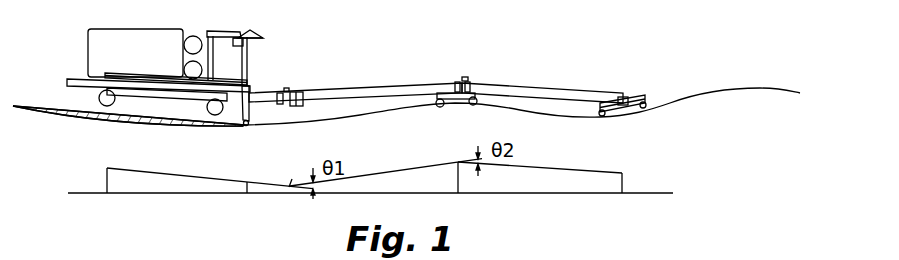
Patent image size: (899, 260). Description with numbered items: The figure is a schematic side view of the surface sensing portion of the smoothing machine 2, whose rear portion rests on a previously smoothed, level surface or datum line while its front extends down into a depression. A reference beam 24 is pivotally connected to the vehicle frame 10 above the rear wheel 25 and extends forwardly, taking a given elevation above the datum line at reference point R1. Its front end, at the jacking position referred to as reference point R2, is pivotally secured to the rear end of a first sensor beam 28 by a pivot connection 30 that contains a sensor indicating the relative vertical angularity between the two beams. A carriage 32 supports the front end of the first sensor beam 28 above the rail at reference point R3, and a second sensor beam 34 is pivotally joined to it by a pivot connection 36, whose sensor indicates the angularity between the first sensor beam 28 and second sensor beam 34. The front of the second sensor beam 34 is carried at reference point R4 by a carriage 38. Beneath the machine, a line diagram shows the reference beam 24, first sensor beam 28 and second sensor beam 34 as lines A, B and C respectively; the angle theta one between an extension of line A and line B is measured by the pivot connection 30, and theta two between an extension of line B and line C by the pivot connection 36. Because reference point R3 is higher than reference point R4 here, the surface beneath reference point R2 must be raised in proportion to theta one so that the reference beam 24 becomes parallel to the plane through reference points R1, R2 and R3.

The smoothing machine 2 is at (138, 27).
The frame 10 is at (72, 79).
The reference beam 24 is at (142, 75).
The rear wheel 25 is at (112, 106).
The first sensor beam 28 is at (389, 88).
The pivot connection 30 is at (293, 87).
The carriage 32 is at (446, 114).
The second sensor beam 34 is at (560, 88).
The pivot connection 36 is at (469, 74).
The carriage 38 is at (637, 99).
The reference point R1 is at (96, 106).
The reference point R2 is at (249, 128).
The reference point R3 is at (460, 109).
The reference point R4 is at (626, 122).
The line A is at (212, 174).
The line B is at (408, 163).
The line C is at (570, 168).